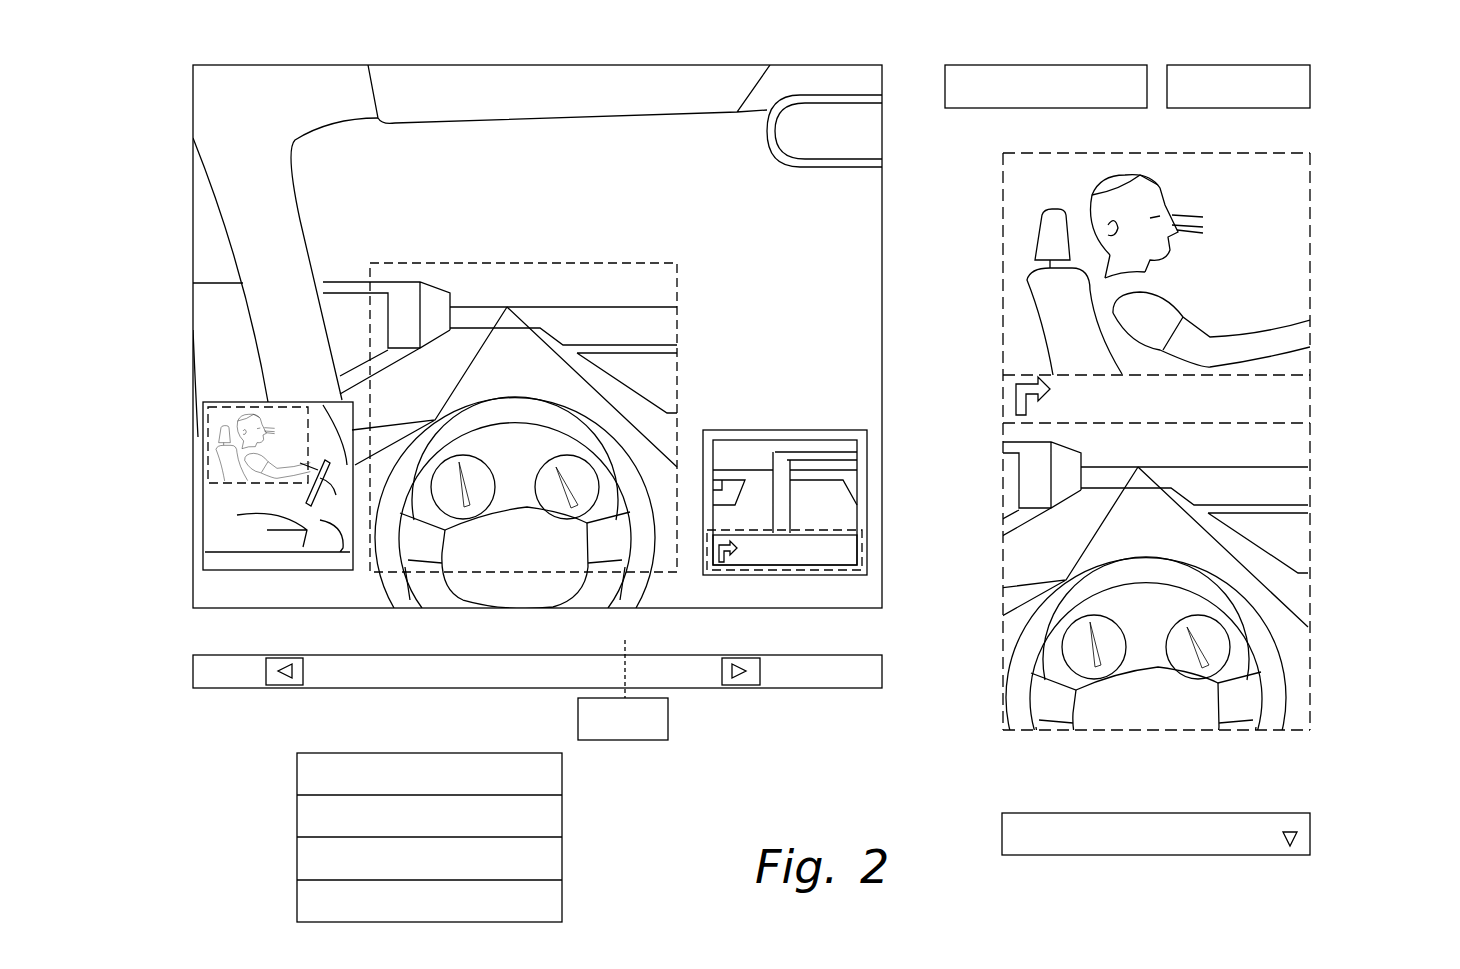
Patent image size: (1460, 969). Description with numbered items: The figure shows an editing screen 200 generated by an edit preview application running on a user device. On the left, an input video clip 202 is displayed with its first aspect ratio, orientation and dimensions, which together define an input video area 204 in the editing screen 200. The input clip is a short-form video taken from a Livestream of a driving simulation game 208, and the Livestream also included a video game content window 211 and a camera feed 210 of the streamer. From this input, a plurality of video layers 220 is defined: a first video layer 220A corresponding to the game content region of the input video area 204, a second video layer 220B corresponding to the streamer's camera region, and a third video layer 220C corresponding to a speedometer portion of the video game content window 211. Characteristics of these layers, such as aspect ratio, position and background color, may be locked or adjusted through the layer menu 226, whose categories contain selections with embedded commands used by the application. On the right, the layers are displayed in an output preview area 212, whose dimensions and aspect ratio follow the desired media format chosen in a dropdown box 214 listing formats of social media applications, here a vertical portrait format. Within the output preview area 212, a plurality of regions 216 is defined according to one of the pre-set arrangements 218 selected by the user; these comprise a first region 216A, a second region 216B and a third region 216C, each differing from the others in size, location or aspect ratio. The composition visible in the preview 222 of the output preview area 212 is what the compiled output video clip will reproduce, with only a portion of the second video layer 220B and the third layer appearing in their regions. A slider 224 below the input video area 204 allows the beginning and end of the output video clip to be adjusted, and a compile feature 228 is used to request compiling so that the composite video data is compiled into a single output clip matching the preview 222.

The editing screen 200 is at (1358, 67).
The input video clip 202 is at (182, 92).
The input video area 204 is at (775, 65).
The driving simulation game 208 is at (825, 259).
The camera feed 210 is at (302, 572).
The video game content window 211 is at (785, 430).
The output preview area 212 is at (1335, 181).
The dropdown box 214 is at (1312, 835).
The plurality of regions 216 is at (998, 299).
The first region 216A is at (1003, 567).
The second region 216B is at (1003, 390).
The third region 216C is at (1003, 200).
The pre-set arrangements 218 is at (1070, 65).
The plurality of video layers 220 is at (233, 210).
The first video layer 220A is at (578, 263).
The second video layer 220B is at (290, 402).
The third video layer 220C is at (805, 572).
The preview 222 is at (1312, 245).
The slider 224 is at (795, 690).
The layer menu 226 is at (234, 746).
The compile button 228 is at (1232, 65).